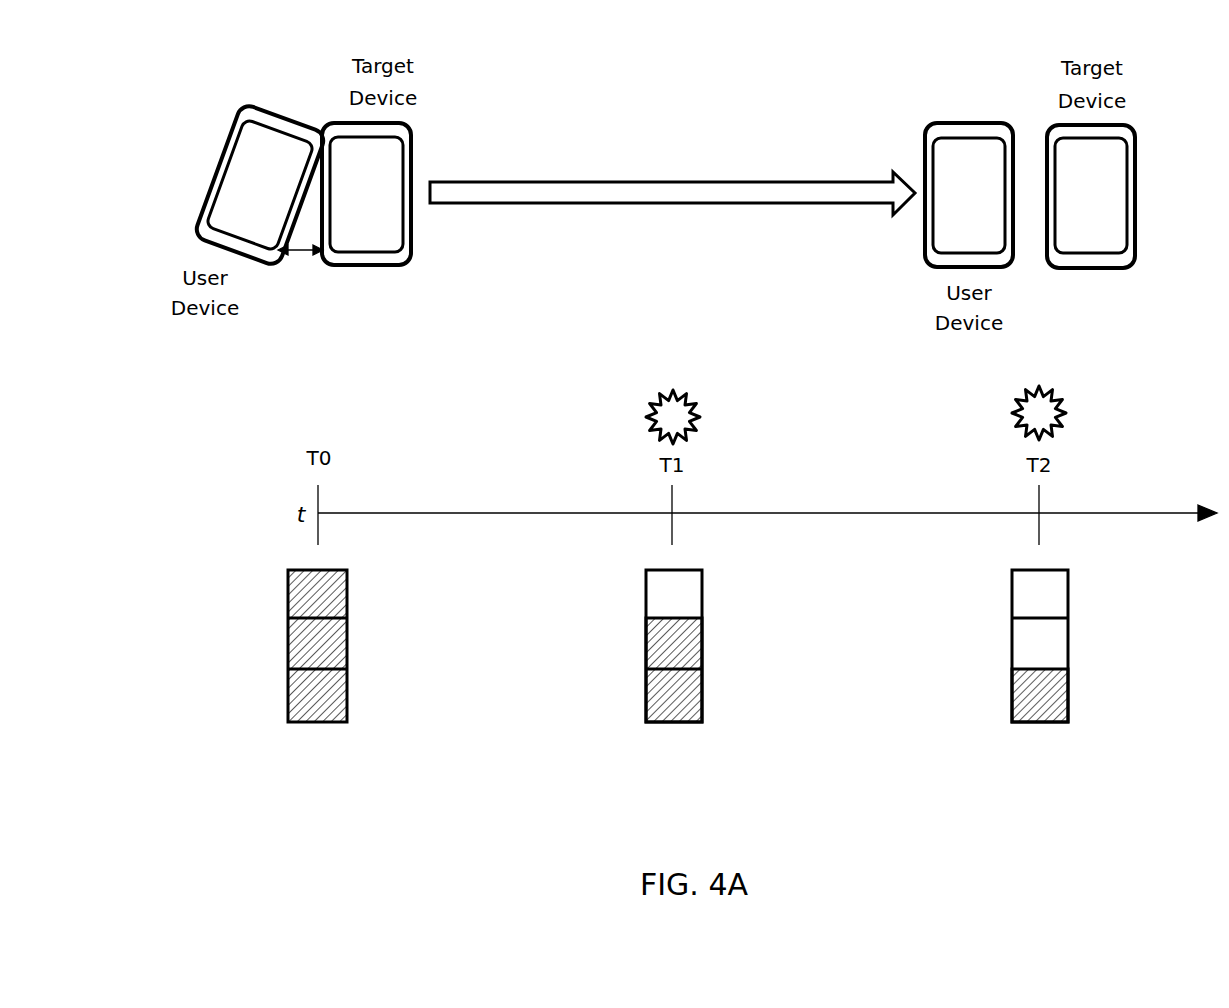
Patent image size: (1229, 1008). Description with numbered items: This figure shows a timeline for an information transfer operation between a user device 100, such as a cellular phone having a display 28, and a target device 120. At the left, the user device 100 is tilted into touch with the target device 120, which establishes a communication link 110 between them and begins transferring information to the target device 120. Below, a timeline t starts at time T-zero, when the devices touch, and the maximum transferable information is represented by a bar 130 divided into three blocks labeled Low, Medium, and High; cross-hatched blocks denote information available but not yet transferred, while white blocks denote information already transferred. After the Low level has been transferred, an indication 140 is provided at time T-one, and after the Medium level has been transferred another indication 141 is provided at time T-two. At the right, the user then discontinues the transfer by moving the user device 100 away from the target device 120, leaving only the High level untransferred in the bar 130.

The user device 100 is at (230, 140).
The display 28 is at (232, 190).
The target device 120 is at (412, 168).
The communication link 110 is at (300, 253).
The indication 140 is at (656, 399).
The indication 141 is at (1057, 397).
The bar 130 is at (347, 715).